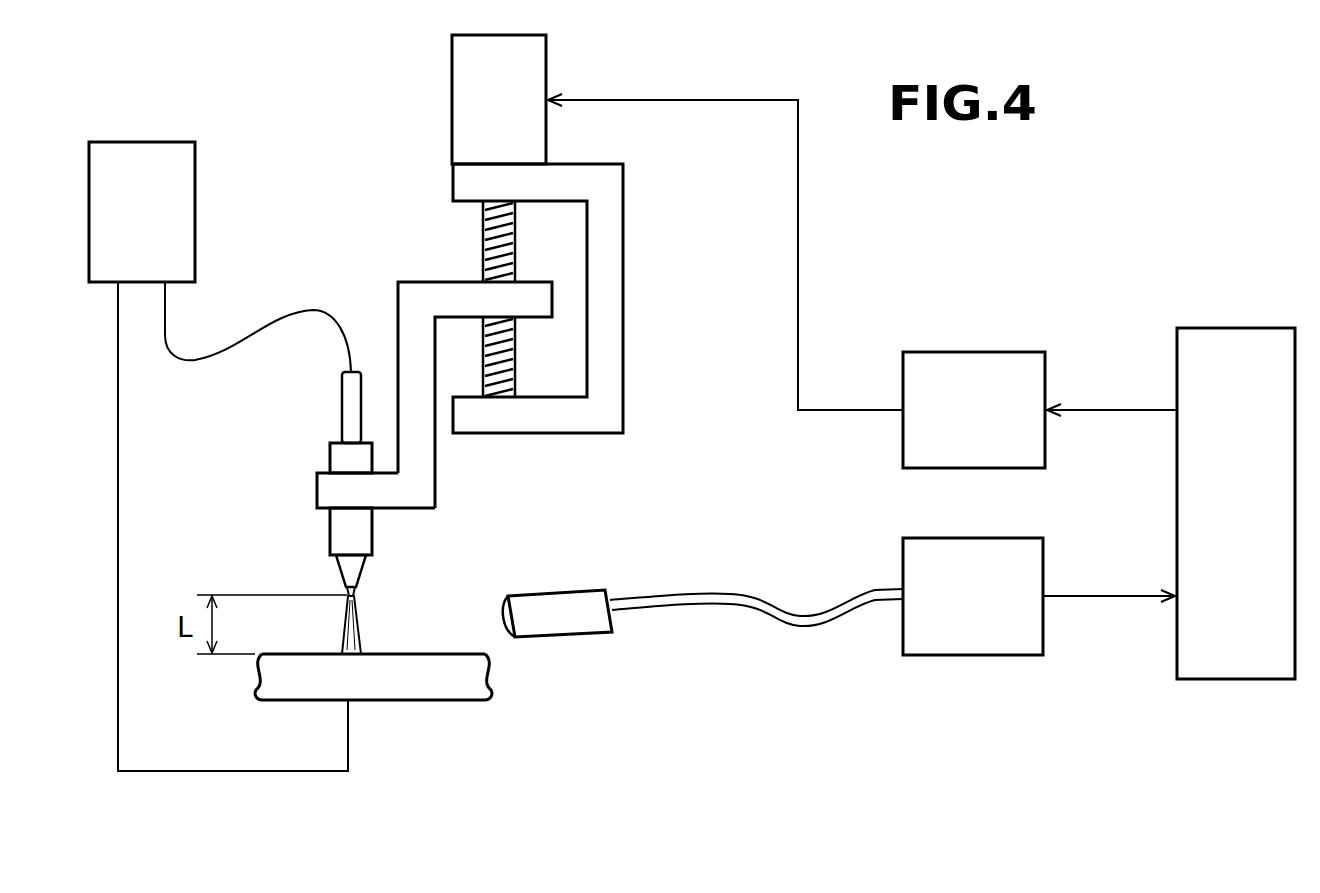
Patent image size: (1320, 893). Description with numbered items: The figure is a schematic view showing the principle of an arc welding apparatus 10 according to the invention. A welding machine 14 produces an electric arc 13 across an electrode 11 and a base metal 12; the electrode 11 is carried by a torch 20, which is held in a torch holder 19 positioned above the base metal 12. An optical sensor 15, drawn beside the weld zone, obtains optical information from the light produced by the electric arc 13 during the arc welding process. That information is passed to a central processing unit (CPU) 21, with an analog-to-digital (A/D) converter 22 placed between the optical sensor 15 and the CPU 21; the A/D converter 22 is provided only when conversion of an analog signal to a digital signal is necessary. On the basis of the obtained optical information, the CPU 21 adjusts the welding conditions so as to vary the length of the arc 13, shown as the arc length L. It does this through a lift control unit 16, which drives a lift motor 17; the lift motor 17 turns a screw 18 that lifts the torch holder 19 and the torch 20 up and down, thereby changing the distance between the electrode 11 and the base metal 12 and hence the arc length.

The arc welding apparatus 10 is at (742, 742).
The electrode 11 is at (362, 590).
The base metal 12 is at (437, 688).
The electric arc 13 is at (360, 628).
The welding machine 14 is at (133, 142).
The optical sensor 15 is at (568, 630).
The lift control unit 16 is at (972, 352).
The lift motor 17 is at (452, 100).
The screw 18 is at (482, 232).
The torch holder 19 is at (413, 340).
The torch 20 is at (338, 527).
The central processing unit (CPU) 21 is at (1224, 328).
The analog-to-digital (A/D) converter 22 is at (975, 655).